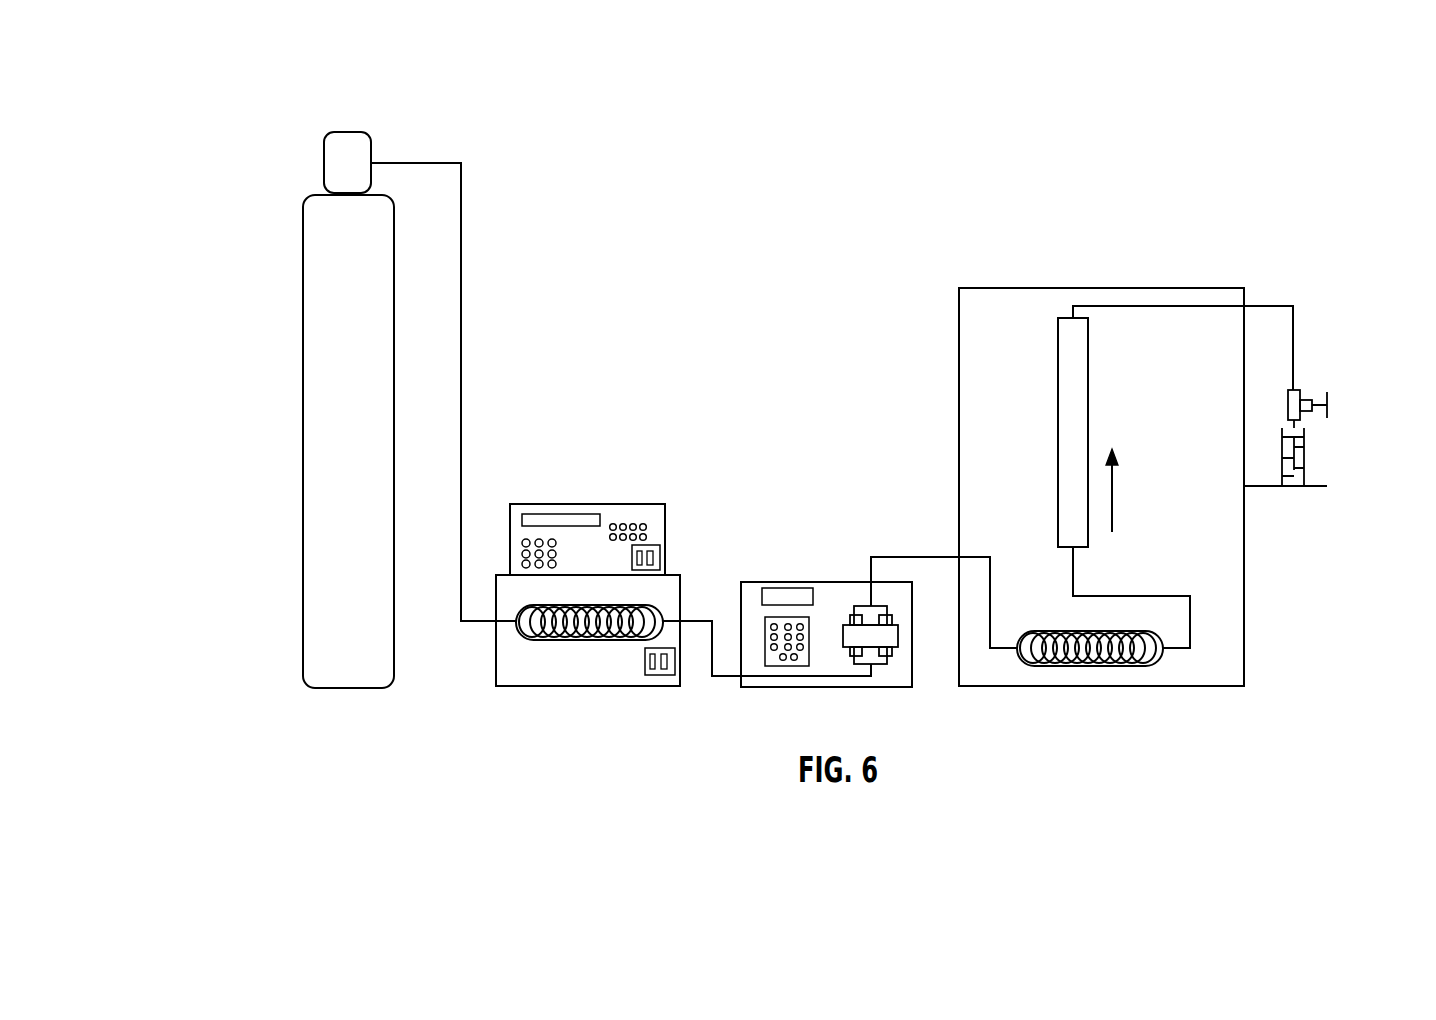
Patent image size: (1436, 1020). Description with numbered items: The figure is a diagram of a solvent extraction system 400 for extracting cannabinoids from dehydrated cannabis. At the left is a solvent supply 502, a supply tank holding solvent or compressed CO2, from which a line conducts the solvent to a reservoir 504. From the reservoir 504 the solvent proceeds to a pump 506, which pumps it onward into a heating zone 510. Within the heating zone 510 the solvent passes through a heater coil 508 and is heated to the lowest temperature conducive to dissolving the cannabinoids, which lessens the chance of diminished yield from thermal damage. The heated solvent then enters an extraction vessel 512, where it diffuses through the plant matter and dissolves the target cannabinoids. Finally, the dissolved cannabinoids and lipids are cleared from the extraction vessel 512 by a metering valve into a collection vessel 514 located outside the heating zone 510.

The system 400 is at (258, 116).
The solvent supply 502 is at (323, 372).
The reservoir 504 is at (588, 503).
The pump 506 is at (800, 580).
The heater coil 508 is at (1103, 668).
The heating zone 510 is at (957, 393).
The extraction vessel 512 is at (1068, 318).
The collection vessel 514 is at (1305, 448).